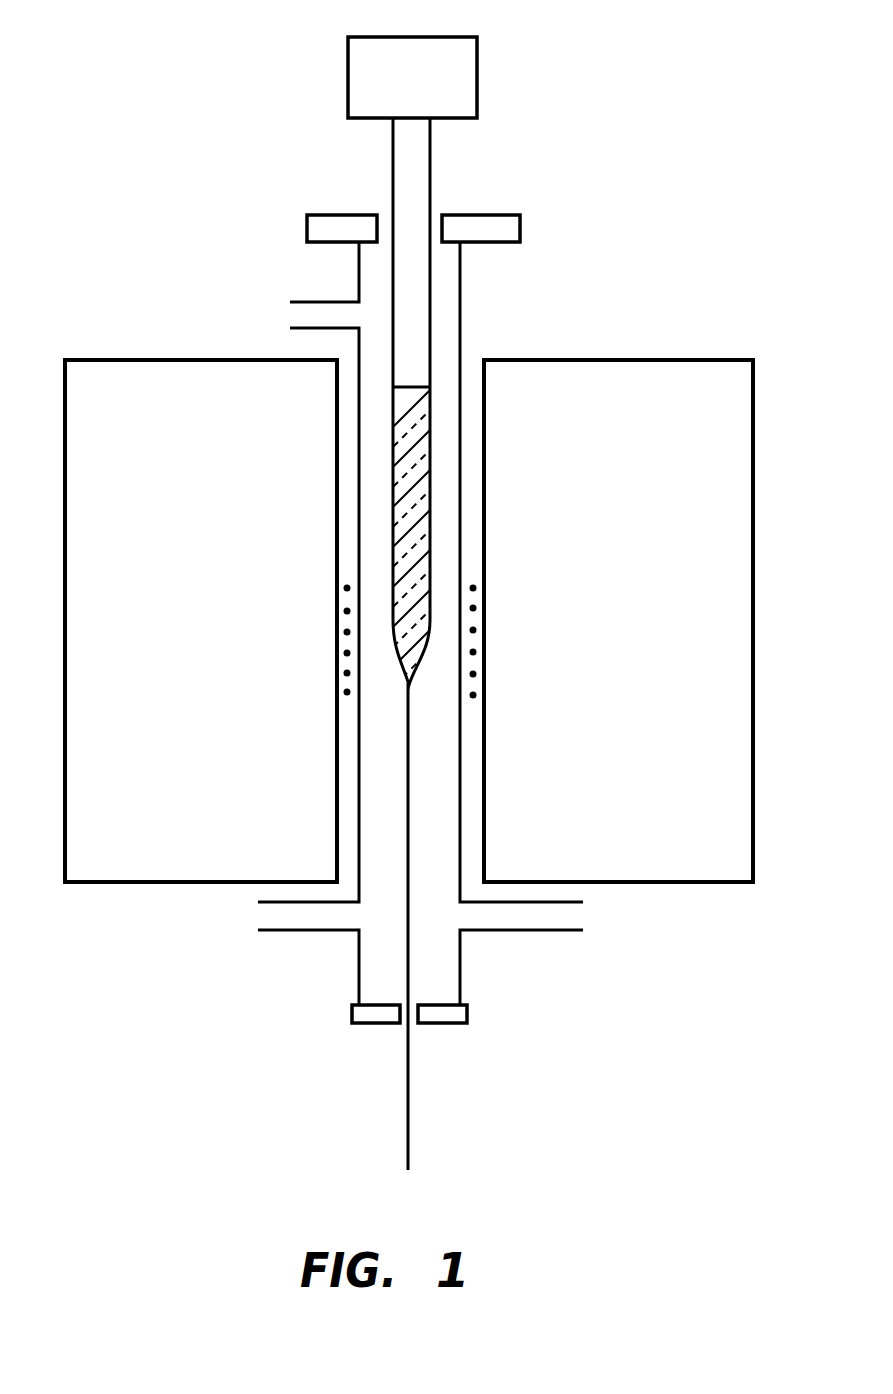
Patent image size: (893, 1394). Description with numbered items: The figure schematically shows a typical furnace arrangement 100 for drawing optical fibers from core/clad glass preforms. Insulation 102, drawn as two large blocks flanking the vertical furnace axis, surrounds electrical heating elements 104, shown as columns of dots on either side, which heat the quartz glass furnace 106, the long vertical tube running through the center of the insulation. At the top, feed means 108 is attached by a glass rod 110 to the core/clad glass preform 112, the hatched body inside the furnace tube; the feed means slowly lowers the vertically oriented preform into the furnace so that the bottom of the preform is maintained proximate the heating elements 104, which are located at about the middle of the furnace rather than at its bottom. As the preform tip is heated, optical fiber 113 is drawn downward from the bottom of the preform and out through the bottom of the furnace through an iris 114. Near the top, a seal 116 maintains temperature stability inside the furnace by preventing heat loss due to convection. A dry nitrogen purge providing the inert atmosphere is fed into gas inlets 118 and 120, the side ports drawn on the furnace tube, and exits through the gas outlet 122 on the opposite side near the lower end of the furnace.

The furnace arrangement 100 is at (280, 58).
The insulation 102 is at (225, 587).
The electrical heating elements 104 is at (347, 653).
The quartz glass furnace 106 is at (460, 325).
The feed means 108 is at (477, 62).
The glass rod 110 is at (431, 173).
The core/clad glass preform 112 is at (430, 433).
The optical fiber 113 is at (408, 1098).
The iris 114 is at (447, 1023).
The seal 116 is at (337, 215).
The gas inlet 118 is at (295, 320).
The gas inlet 120 is at (263, 917).
The gas outlet 122 is at (573, 918).